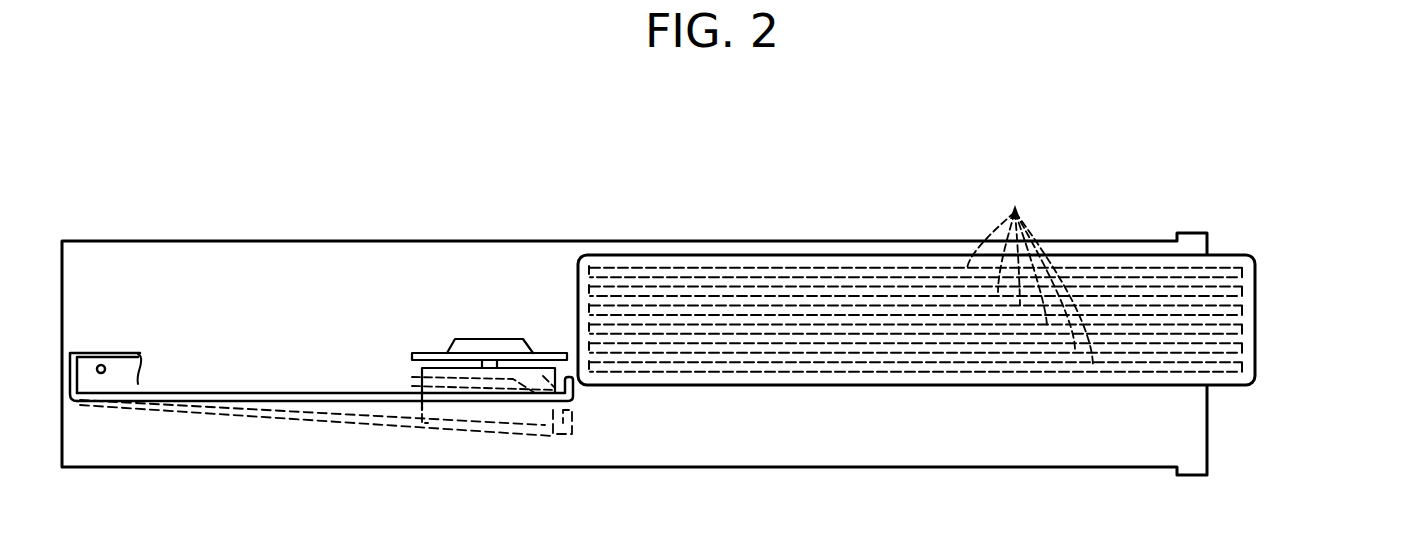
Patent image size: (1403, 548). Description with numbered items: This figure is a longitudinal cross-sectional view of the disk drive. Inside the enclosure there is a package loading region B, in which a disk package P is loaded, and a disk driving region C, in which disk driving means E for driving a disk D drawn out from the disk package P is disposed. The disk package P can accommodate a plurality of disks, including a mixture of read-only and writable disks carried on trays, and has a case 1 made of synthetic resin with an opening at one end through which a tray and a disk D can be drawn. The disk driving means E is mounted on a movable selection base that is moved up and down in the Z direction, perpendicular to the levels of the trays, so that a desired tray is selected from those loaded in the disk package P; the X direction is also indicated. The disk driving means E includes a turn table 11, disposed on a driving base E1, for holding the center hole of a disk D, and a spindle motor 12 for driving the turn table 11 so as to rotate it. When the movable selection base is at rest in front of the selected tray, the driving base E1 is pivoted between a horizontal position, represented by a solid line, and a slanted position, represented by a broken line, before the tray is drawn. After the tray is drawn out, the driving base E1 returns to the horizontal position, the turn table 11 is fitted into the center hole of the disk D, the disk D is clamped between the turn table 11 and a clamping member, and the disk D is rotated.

The case 1 is at (374, 239).
The turn table 11 is at (473, 343).
The spindle motor 12 is at (555, 395).
The disk driving region C is at (152, 277).
The disk package P is at (681, 237).
The disk D is at (1030, 269).
The disk driving means E is at (376, 381).
The driving base E1 is at (267, 393).
The package loading region B is at (1177, 415).
The Z direction Z is at (309, 284).
The X direction X is at (1294, 322).